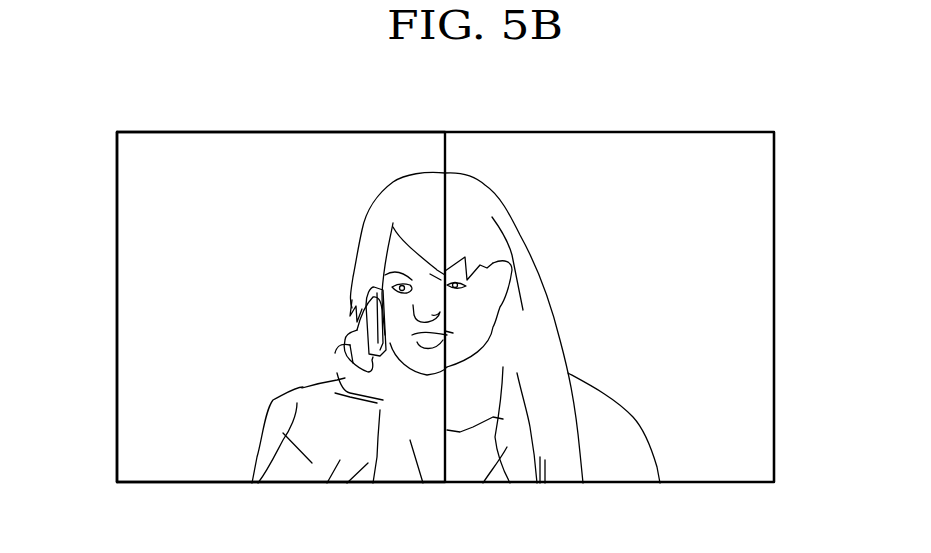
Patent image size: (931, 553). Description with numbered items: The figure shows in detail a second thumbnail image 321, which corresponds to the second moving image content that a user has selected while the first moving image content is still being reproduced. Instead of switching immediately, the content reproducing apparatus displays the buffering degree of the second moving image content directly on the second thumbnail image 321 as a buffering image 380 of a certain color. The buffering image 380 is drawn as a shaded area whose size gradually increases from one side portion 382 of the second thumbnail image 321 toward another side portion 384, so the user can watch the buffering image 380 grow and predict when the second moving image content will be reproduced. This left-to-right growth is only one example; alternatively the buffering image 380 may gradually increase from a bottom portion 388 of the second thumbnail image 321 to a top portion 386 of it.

The second thumbnail image 321 is at (609, 122).
The buffering image 380 is at (125, 310).
The one side portion 382 is at (117, 388).
The another side portion 384 is at (774, 307).
The top portion 386 is at (281, 131).
The bottom portion 388 is at (282, 483).